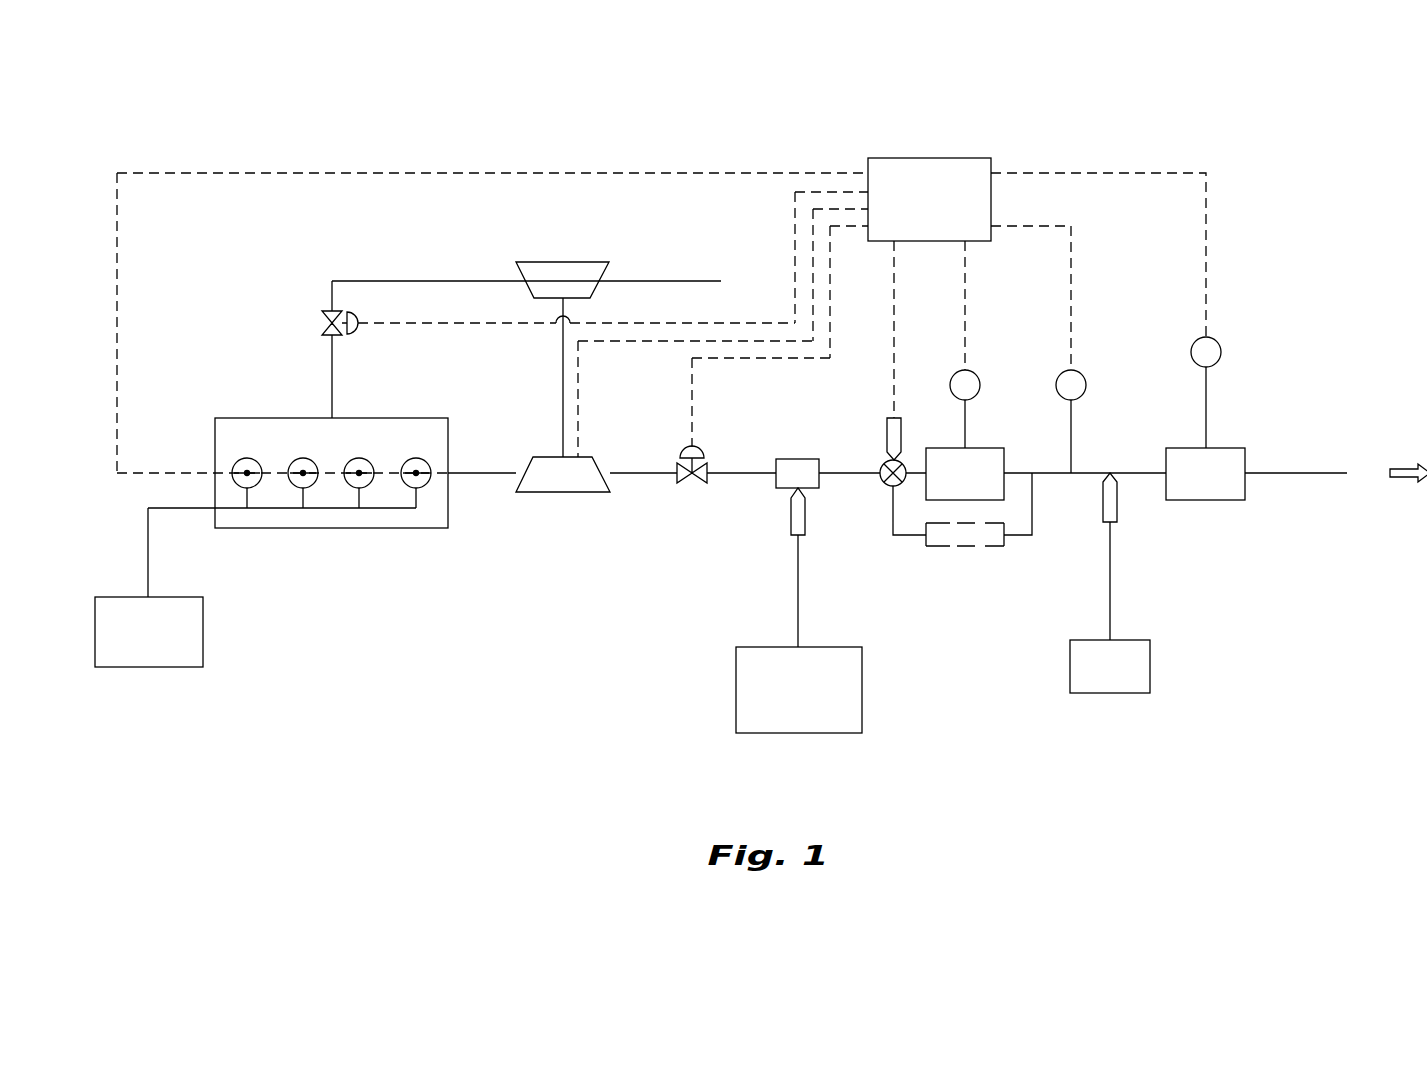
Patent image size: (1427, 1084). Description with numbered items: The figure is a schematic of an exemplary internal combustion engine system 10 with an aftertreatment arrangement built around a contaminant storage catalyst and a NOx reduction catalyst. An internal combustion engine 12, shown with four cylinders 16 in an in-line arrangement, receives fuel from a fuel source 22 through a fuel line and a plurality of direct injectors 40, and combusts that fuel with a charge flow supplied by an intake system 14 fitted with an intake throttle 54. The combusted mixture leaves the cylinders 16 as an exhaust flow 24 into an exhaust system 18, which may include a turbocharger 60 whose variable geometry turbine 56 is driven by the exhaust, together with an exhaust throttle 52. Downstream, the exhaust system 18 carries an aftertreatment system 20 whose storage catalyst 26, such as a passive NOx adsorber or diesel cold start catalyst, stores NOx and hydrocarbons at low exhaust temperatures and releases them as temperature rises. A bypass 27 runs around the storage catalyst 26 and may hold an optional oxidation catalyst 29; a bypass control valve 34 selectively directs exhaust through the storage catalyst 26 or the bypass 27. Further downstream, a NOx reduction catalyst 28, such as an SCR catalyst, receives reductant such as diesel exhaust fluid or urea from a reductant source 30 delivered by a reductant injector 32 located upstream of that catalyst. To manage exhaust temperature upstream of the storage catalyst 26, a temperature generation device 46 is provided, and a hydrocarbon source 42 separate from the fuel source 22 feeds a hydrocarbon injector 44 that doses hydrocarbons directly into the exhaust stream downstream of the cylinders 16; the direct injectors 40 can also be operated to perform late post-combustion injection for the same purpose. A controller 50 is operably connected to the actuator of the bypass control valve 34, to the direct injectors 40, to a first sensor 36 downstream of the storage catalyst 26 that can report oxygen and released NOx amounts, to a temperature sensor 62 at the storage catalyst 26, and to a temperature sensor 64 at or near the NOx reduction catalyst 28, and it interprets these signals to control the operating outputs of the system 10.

The internal combustion engine system 10 is at (1333, 185).
The internal combustion engine 12 is at (320, 530).
The intake system 14 is at (332, 283).
The cylinders 16 is at (233, 470).
The exhaust system 18 is at (476, 485).
The aftertreatment system 20 is at (1180, 596).
The fuel source 22 is at (134, 647).
The exhaust flow 24 is at (1396, 468).
The storage catalyst 26 is at (951, 488).
The bypass 27 is at (1014, 547).
The oxidation catalyst 29 is at (938, 547).
The NOx reduction catalyst 28 is at (1191, 488).
The reductant source 30 is at (1096, 681).
The reductant injector 32 is at (1119, 511).
The bypass control valve 34 is at (885, 461).
The first sensor 36 is at (1086, 392).
The direct injectors 40 is at (303, 473).
The hydrocarbon source 42 is at (784, 704).
The hydrocarbon injector 44 is at (806, 520).
The temperature generation device 46 is at (798, 459).
The controller 50 is at (915, 212).
The exhaust throttle 52 is at (692, 484).
The intake throttle 54 is at (322, 325).
The variable geometry turbine 56 is at (558, 494).
The turbocharger 60 is at (622, 250).
The temperature sensor 62 is at (972, 373).
The temperature sensor 64 is at (1221, 356).